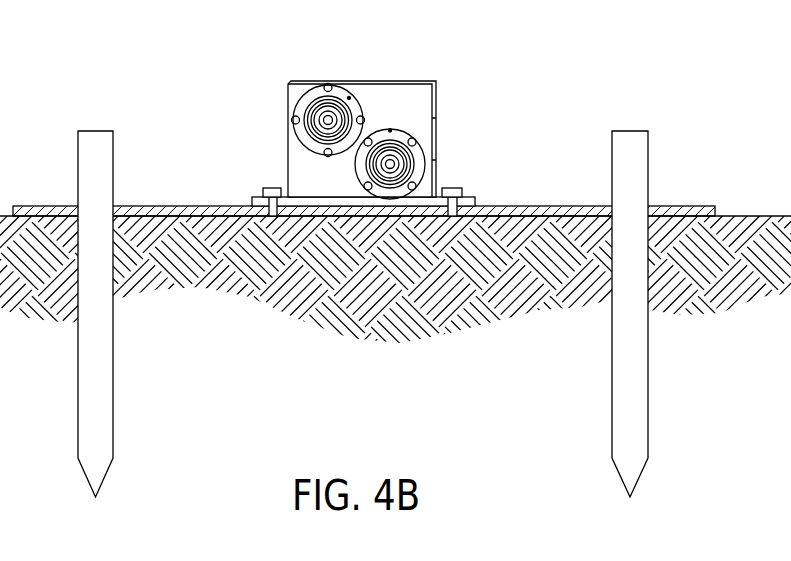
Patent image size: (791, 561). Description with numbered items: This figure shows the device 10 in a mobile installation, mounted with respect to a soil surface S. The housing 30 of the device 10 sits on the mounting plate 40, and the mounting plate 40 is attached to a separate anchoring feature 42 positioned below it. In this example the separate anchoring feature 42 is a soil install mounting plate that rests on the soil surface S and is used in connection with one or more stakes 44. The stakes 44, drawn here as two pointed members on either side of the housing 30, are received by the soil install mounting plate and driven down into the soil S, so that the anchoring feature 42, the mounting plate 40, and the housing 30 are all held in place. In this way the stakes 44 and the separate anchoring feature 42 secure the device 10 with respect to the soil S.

The device 10 is at (393, 116).
The housing 30 is at (385, 100).
The mounting plate 40 is at (467, 195).
The separate anchoring feature 42 is at (565, 203).
The stakes 44 is at (96, 148).
The soil surface S is at (395, 279).